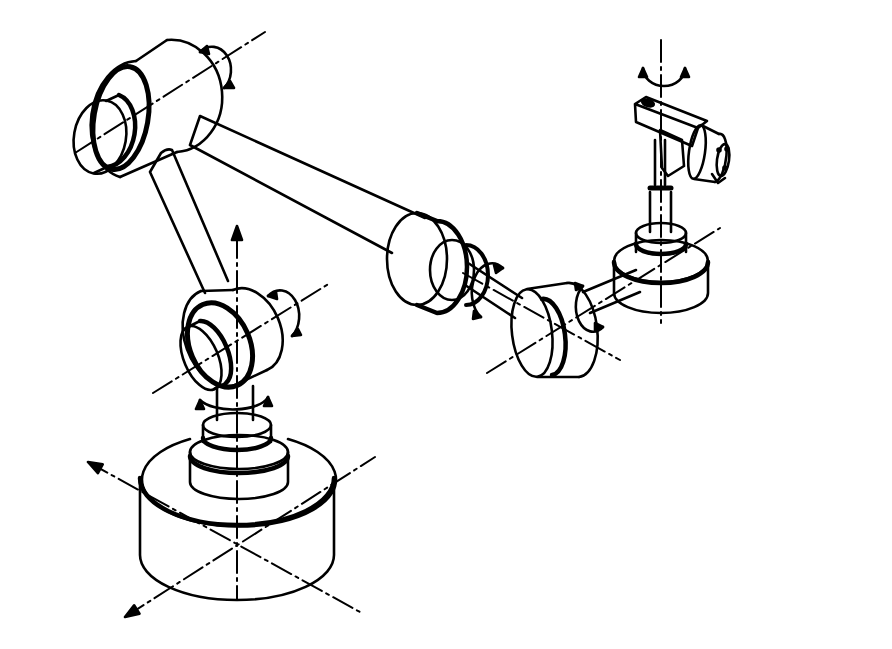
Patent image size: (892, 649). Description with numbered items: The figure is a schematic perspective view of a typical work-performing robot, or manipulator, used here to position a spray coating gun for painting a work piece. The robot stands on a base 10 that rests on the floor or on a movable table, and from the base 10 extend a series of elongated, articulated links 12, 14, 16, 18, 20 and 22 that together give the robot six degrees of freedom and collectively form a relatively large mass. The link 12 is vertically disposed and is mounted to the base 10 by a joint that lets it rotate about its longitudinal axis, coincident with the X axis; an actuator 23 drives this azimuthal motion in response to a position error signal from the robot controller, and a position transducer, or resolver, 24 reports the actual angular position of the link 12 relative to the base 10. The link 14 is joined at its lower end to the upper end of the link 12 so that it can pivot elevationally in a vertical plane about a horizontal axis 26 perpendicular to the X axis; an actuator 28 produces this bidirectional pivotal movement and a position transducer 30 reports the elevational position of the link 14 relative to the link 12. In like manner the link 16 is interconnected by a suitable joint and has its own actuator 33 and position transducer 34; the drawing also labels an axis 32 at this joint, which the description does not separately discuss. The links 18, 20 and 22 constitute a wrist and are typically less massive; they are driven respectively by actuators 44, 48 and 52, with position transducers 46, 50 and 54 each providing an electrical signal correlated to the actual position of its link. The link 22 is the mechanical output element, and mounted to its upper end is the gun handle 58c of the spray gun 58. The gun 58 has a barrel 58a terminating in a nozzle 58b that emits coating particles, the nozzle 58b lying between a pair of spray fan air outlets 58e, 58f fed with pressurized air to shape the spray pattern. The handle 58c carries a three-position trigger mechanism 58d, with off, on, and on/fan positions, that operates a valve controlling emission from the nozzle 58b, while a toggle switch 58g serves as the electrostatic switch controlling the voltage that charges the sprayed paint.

The base 10 is at (313, 538).
The link 12 is at (258, 390).
The link 14 is at (190, 240).
The link 16 is at (329, 195).
The link 18 is at (517, 288).
The link 20 is at (622, 300).
The link 22 is at (676, 208).
The actuator 23 is at (278, 472).
The position transducer 24 is at (263, 453).
The horizontal axis 26 is at (172, 376).
The actuator 28 is at (272, 350).
The position transducer 30 is at (182, 348).
The shoulder axis 32 is at (248, 67).
The actuator 33 is at (143, 52).
The position transducer 34 is at (106, 162).
The actuator 44 is at (430, 218).
The position transducer 46 is at (470, 250).
The actuator 48 is at (597, 372).
The position transducer 50 is at (537, 365).
The actuator 52 is at (695, 293).
The position transducer 54 is at (688, 248).
The spray coating gun 58 is at (684, 168).
The barrel 58a is at (693, 133).
The nozzle 58b is at (733, 157).
The gun handle 58c is at (657, 143).
The trigger mechanism 58d is at (660, 175).
The spray fan air outlet 58e is at (727, 142).
The spray fan air outlet 58f is at (720, 182).
The toggle switch 58g is at (650, 103).